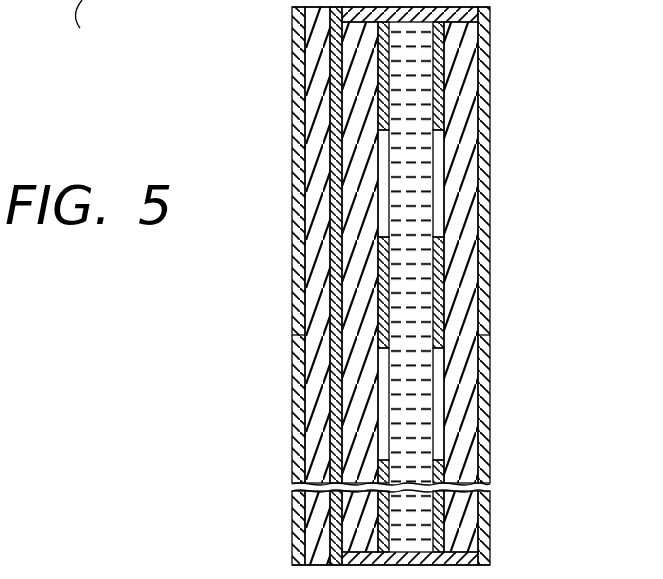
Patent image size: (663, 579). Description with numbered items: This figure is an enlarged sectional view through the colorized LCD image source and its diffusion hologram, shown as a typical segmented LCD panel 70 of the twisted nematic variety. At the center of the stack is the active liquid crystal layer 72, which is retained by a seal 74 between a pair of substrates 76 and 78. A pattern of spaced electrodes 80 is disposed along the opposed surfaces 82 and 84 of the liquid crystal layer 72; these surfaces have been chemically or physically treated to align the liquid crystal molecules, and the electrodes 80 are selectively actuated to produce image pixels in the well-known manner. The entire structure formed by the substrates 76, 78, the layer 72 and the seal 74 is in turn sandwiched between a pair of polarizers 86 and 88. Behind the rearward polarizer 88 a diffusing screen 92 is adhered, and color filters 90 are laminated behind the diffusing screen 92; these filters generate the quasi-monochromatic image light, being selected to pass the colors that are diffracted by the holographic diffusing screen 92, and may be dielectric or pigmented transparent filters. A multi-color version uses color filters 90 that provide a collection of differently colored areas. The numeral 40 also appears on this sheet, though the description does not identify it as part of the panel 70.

The electrode holder 40 is at (94, 25).
The segmented LCD panel 70 is at (280, 313).
The active liquid crystal layer 72 is at (425, 53).
The seal 74 is at (400, 552).
The substrate 76 is at (353, 97).
The substrate 78 is at (463, 95).
The spaced electrodes 80 is at (441, 289).
The opposed surface 82 is at (447, 406).
The opposed surface 84 is at (390, 184).
The polarizer 86 is at (483, 412).
The rearward polarizer 88 is at (334, 147).
The color filters 90 is at (302, 433).
The diffusing screen 92 is at (320, 463).